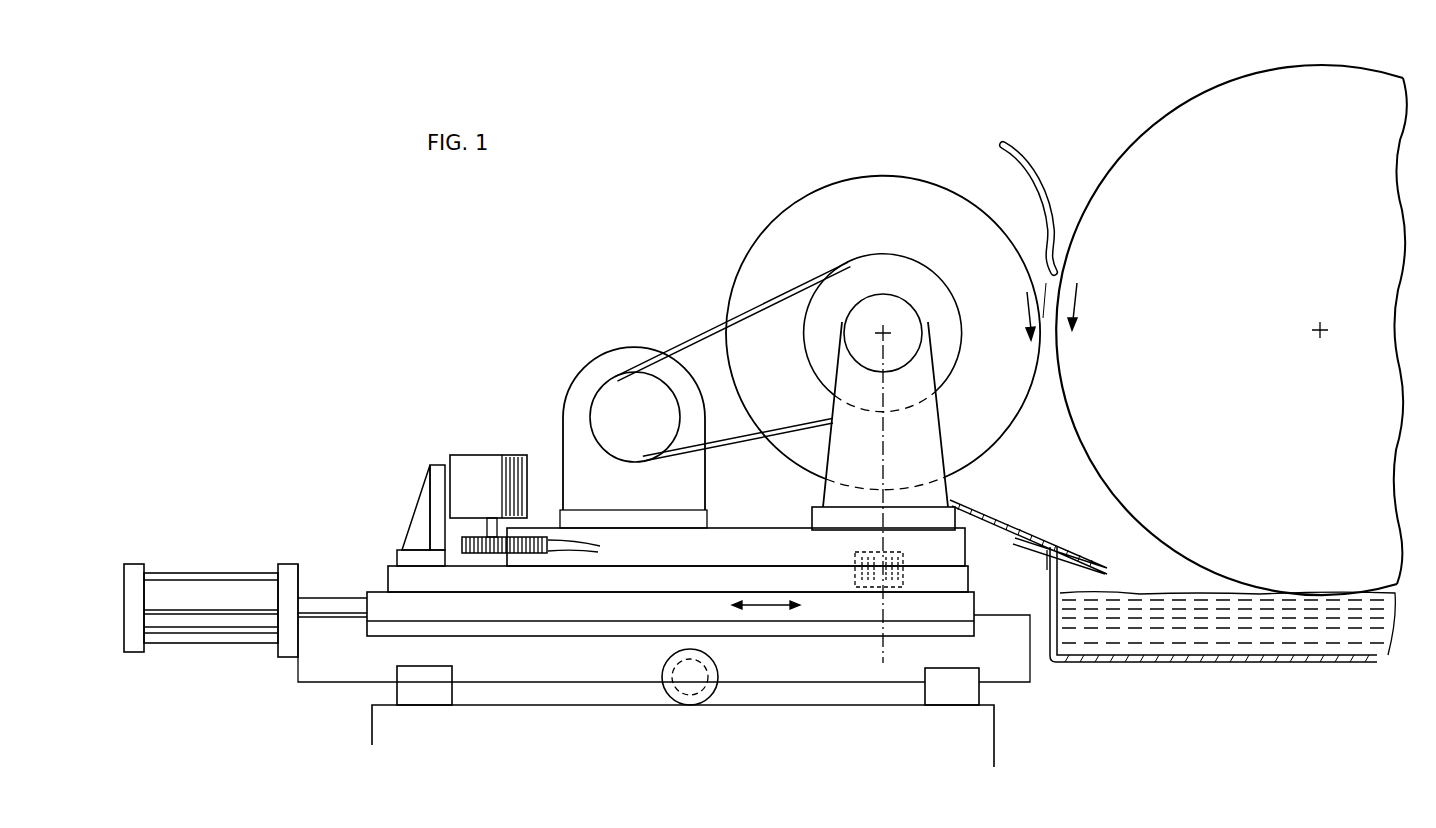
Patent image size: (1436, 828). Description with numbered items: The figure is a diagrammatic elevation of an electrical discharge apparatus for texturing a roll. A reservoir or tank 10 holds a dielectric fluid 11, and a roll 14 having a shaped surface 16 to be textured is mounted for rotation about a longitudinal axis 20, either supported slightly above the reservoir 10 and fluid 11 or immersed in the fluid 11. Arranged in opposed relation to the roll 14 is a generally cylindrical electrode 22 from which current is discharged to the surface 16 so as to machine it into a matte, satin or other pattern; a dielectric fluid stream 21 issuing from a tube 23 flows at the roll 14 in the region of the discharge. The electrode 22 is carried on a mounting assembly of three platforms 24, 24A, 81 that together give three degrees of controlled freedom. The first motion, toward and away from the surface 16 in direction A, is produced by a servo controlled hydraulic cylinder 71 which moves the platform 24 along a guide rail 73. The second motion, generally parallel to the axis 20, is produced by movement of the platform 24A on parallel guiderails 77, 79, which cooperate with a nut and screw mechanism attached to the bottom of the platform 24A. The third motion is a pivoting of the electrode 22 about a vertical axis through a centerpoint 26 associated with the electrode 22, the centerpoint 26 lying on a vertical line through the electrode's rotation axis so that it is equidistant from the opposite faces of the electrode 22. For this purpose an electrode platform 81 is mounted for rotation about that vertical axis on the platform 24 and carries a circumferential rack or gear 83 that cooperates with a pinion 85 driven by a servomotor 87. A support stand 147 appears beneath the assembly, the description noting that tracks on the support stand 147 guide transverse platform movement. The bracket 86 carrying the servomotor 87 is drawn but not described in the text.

The reservoir 10 is at (1060, 630).
The dielectric fluid 11 is at (1227, 623).
The roll 14 is at (1275, 145).
The shaped surface 16 is at (1193, 102).
The longitudinal axis 20 is at (1316, 329).
The dielectric fluid stream 21 is at (1057, 285).
The electrode 22 is at (920, 178).
The tube 23 is at (1030, 158).
The platform 24 is at (958, 580).
The platform 24A is at (1020, 676).
The centerpoint 26 is at (893, 330).
The servo controlled hydraulic cylinder 71 is at (220, 575).
The guide rail 73 is at (388, 582).
The guiderail 77 is at (442, 674).
The guiderail 79 is at (943, 682).
The electrode platform 81 is at (758, 540).
The circumferential rack 83 is at (595, 548).
The pinion 85 is at (477, 553).
The bracket 86 is at (418, 513).
The servomotor 87 is at (493, 458).
The support stand 147 is at (982, 747).